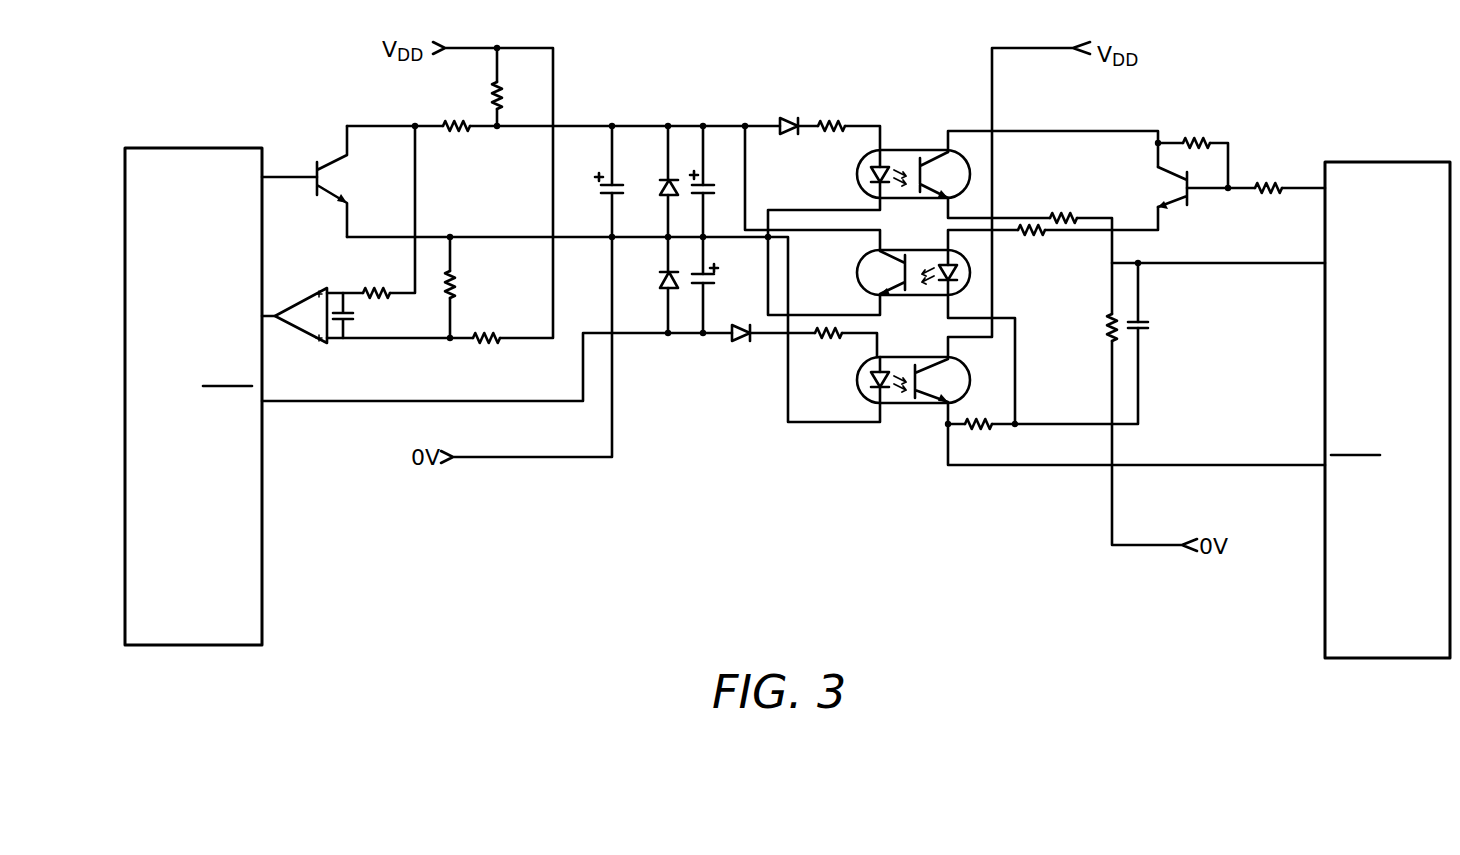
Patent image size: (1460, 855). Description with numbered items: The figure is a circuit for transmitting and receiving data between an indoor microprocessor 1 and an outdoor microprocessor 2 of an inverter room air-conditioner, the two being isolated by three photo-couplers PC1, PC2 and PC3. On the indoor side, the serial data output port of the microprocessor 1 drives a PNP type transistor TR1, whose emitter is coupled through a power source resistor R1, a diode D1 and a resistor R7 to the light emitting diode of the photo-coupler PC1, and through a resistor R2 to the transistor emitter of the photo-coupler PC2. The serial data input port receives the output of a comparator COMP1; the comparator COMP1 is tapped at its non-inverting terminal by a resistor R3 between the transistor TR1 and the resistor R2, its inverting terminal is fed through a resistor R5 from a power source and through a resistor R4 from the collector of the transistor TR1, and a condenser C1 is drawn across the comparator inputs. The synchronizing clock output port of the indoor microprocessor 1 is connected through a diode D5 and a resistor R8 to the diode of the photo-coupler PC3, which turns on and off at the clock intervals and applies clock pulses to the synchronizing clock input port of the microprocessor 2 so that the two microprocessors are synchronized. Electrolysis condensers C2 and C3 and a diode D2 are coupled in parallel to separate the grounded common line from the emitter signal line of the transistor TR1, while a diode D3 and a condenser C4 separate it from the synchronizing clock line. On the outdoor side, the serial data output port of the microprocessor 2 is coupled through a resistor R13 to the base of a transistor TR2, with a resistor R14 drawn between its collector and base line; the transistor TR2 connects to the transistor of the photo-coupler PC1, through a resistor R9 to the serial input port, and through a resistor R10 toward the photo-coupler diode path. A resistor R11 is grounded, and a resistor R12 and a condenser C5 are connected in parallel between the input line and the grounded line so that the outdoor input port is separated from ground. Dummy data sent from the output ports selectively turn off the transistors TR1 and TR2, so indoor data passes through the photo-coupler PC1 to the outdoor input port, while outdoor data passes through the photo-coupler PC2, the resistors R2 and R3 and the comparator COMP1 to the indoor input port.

The indoor microprocessor 1 is at (193, 396).
The outdoor microprocessor 2 is at (1387, 410).
The PNP type transistor TR1 is at (354, 181).
The transistor TR2 is at (1161, 188).
The comparator COMP1 is at (307, 299).
The power source resistor R1 is at (511, 97).
The resistor R2 is at (458, 110).
The resistor R3 is at (378, 279).
The resistor R4 is at (465, 287).
The resistor R5 is at (489, 355).
The resistor R7 is at (834, 110).
The resistor R8 is at (829, 352).
The resistor R9 is at (1065, 205).
The resistor R10 is at (1038, 248).
The resistor R11 is at (985, 409).
The resistor R12 is at (1095, 329).
The resistor R13 is at (1275, 174).
The resistor R14 is at (1203, 128).
The capacitor C1 is at (355, 316).
The electrolysis condenser C2 is at (600, 190).
The electrolysis condenser C3 is at (714, 193).
The condenser C4 is at (714, 288).
The condenser C5 is at (1151, 340).
The diode D1 is at (790, 110).
The diode D2 is at (680, 206).
The diode D3 is at (679, 298).
The diode D5 is at (746, 349).
The photo-coupler PC1 is at (913, 156).
The photo-coupler PC2 is at (913, 257).
The photo-coupler PC3 is at (913, 363).